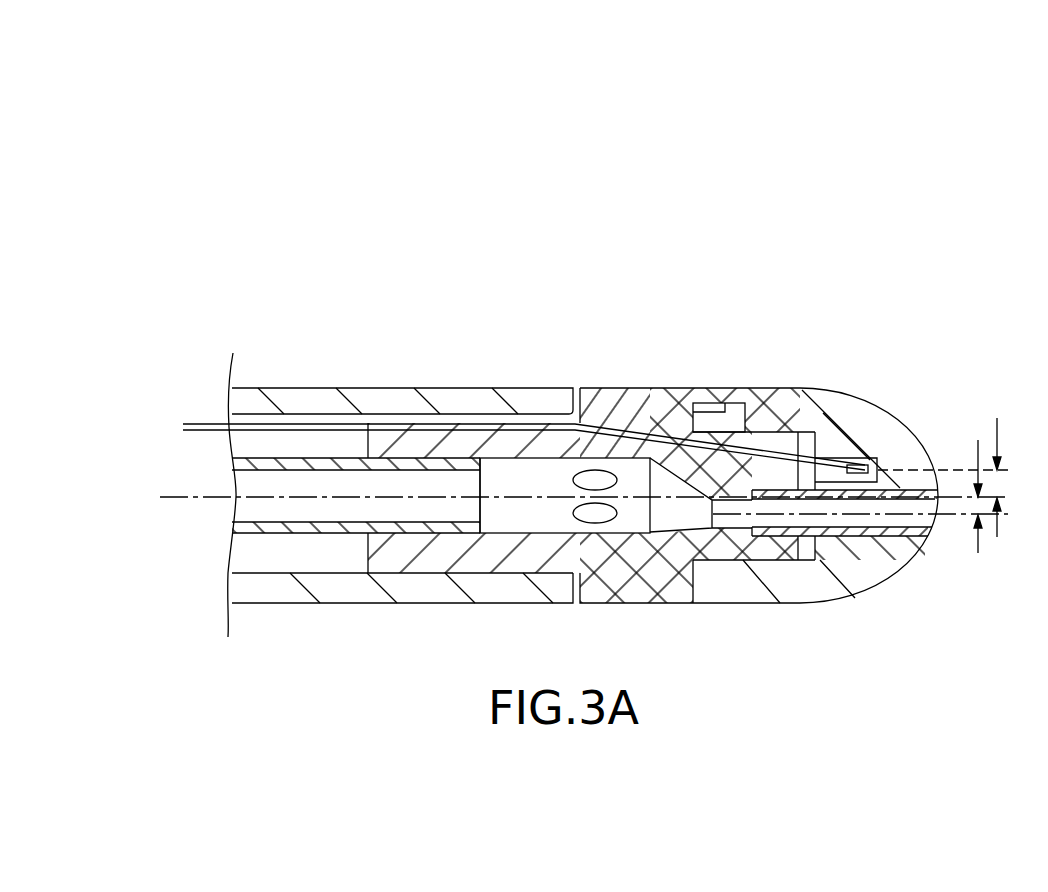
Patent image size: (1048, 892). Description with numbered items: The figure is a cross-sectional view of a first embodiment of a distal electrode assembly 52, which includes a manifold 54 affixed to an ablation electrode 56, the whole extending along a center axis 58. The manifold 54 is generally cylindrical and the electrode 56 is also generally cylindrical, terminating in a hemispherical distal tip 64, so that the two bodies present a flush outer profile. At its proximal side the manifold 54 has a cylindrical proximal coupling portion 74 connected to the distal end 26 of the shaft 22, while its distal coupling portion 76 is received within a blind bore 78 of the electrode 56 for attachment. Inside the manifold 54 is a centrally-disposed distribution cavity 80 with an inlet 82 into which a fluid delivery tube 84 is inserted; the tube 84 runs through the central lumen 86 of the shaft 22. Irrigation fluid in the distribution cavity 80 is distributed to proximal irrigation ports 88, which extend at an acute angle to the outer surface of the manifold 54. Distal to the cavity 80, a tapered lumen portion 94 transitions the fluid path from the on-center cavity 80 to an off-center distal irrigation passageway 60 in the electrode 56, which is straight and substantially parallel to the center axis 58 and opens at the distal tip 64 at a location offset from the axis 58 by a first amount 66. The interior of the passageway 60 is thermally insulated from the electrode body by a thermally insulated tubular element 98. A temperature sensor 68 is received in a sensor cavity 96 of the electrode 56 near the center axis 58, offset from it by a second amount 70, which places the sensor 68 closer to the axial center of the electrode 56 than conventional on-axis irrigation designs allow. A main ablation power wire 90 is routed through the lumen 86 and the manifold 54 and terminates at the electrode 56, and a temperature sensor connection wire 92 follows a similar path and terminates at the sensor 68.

The shaft 22 is at (299, 388).
The distal end of the shaft 26 is at (429, 350).
The distal electrode assembly 52 is at (668, 290).
The manifold 54 is at (617, 368).
The ablation electrode 56 is at (795, 366).
The center axis 58 is at (197, 487).
The distal irrigation passageway 60 is at (850, 562).
The distal tip 64 is at (910, 420).
The first amount 66 is at (978, 553).
The temperature sensor 68 is at (863, 457).
The second amount 70 is at (997, 537).
The proximal coupling portion 74 is at (393, 556).
The distal coupling portion 76 is at (730, 550).
The blind bore 78 is at (760, 388).
The distribution cavity 80 is at (544, 528).
The inlet 82 is at (493, 503).
The fluid delivery tube 84 is at (395, 528).
The central lumen 86 is at (314, 569).
The proximal irrigation ports 88 is at (648, 585).
The main ablation power wire 90 is at (712, 405).
The temperature sensor connection wire 92 is at (740, 450).
The tapered lumen portion 94 is at (690, 524).
The sensor cavity 96 is at (877, 464).
The thermally insulated tubular element 98 is at (880, 530).